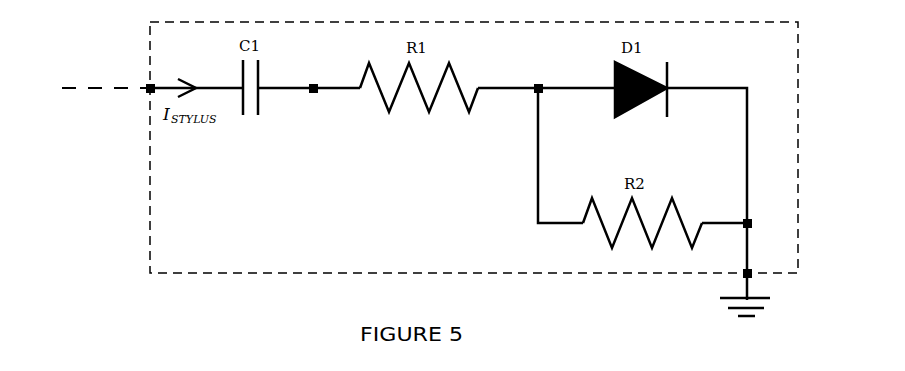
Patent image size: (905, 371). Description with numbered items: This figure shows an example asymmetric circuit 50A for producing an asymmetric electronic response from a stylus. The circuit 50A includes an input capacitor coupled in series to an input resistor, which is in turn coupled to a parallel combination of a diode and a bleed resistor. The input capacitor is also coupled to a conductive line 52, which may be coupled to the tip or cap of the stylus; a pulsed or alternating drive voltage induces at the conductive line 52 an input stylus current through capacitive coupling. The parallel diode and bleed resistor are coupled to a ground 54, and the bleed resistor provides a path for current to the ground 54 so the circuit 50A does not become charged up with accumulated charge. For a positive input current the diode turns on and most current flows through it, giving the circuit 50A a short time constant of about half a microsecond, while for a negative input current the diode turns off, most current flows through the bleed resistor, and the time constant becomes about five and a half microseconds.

The asymmetric circuit 50A is at (148, 219).
The conductive line 52 is at (101, 92).
The ground 54 is at (720, 298).